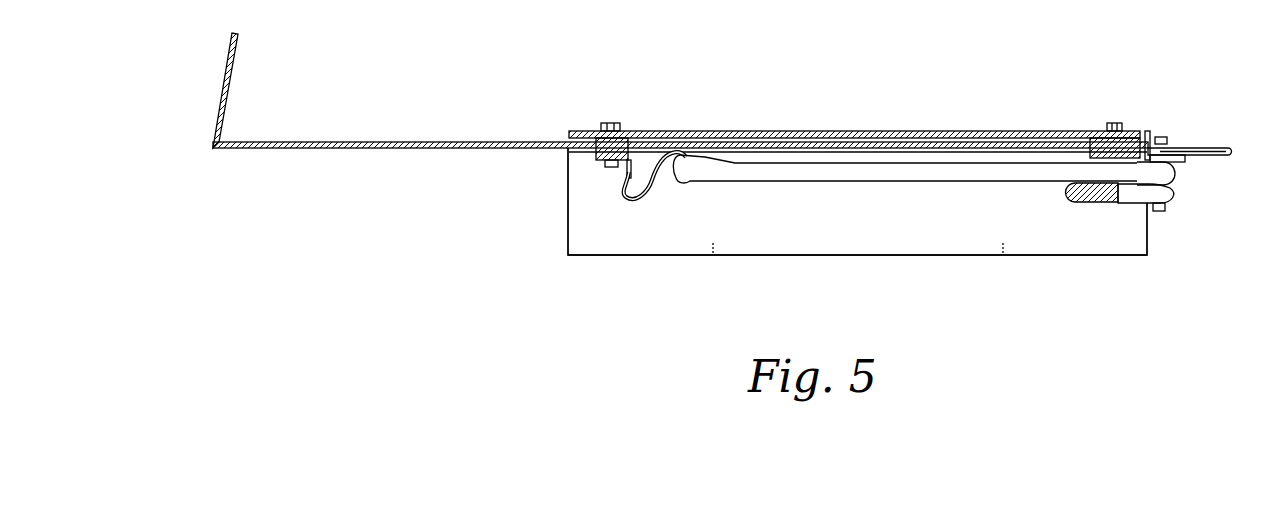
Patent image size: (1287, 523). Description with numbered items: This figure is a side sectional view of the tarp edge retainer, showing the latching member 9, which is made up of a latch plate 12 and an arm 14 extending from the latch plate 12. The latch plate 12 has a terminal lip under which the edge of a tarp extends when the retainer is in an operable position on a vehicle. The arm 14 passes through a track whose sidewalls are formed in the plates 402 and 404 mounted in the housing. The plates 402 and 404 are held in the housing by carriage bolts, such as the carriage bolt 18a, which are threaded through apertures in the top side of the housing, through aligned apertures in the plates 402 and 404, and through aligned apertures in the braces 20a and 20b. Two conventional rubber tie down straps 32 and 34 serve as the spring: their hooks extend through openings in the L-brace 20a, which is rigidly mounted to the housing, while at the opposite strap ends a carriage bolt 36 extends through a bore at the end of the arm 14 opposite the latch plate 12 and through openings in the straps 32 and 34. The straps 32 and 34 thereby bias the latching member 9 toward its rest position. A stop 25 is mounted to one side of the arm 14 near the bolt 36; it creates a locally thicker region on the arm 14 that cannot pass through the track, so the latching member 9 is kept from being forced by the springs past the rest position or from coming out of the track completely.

The latching member 9 is at (266, 188).
The latch plate 12 is at (225, 102).
The arm 14 is at (377, 149).
The carriage bolt 18a is at (612, 122).
The L-brace 20a is at (600, 158).
The brace 20b is at (1192, 147).
The stop 25 is at (1145, 130).
The rubber tie down strap 32 is at (1180, 168).
The rubber tie down strap 34 is at (1180, 195).
The carriage bolt 36 is at (1168, 135).
The plate 402 is at (1095, 130).
The plate 404 is at (1067, 130).